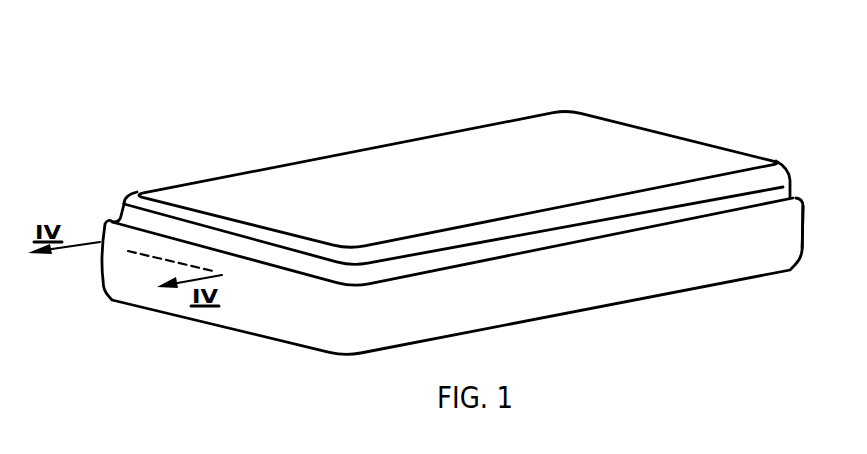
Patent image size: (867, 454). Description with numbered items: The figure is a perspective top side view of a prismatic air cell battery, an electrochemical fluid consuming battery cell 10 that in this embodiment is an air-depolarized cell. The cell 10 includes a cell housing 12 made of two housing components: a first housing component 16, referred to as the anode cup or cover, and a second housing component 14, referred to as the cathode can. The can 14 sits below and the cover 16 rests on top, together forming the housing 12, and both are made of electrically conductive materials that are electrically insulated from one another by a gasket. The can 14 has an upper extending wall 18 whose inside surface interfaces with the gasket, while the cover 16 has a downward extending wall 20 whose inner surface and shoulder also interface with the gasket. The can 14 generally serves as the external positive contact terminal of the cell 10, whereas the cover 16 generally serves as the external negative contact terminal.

The electrochemical fluid consuming battery cell 10 is at (672, 58).
The cell housing 12 is at (792, 188).
The second housing component (cathode can) 14 is at (720, 255).
The first housing component (anode cover) 16 is at (370, 160).
The upper extending wall of the can 18 is at (795, 227).
The downward extending wall of the cover 20 is at (118, 216).